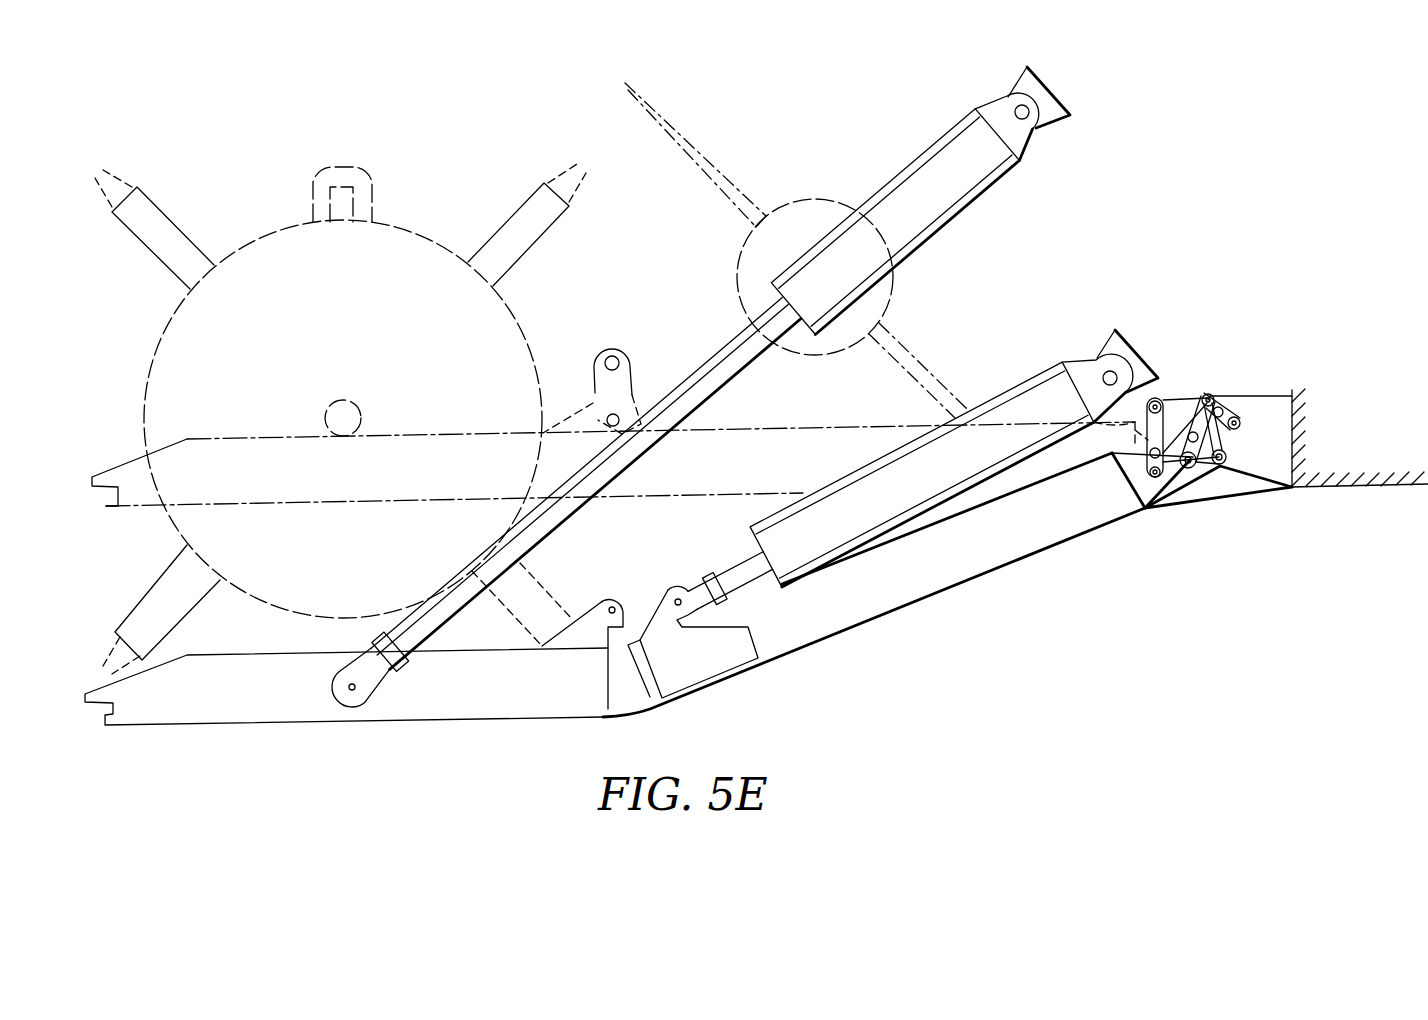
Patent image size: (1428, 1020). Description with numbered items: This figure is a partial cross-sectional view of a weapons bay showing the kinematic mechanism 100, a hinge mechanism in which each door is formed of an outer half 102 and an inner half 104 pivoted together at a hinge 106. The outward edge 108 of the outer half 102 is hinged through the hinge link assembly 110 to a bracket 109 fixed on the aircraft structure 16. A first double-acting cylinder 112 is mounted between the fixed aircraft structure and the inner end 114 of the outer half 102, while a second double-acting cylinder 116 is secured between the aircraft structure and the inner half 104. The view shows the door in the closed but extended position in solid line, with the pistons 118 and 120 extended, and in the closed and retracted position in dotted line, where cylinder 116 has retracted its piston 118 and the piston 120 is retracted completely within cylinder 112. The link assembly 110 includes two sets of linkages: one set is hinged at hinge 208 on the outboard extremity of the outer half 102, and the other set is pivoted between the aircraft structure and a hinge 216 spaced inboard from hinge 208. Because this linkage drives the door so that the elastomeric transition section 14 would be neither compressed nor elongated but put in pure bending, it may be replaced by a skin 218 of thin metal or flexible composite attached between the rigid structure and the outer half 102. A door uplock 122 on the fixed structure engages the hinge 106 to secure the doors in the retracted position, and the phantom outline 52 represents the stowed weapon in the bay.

The mast 52 is at (272, 230).
The kinematic mechanism 100 is at (649, 284).
The outer half 102 is at (898, 598).
The inner half 104 is at (310, 712).
The hinge 106 is at (612, 596).
The outward edge 108 is at (1142, 512).
The bracket 109 is at (1256, 405).
The hinge link assembly 110 is at (1200, 474).
The first double-acting cylinder 112 is at (855, 490).
The inner end 114 is at (718, 665).
The second double-acting cylinder 116 is at (915, 151).
The piston 118 is at (648, 452).
The piston 120 is at (735, 562).
The door uplock 122 is at (610, 346).
The aircraft structure 16 is at (1050, 120).
The elastomeric transition section 14 is at (1239, 505).
The skin 218 is at (1275, 490).
The hinge 208 is at (1190, 470).
The hinge 216 is at (1160, 482).